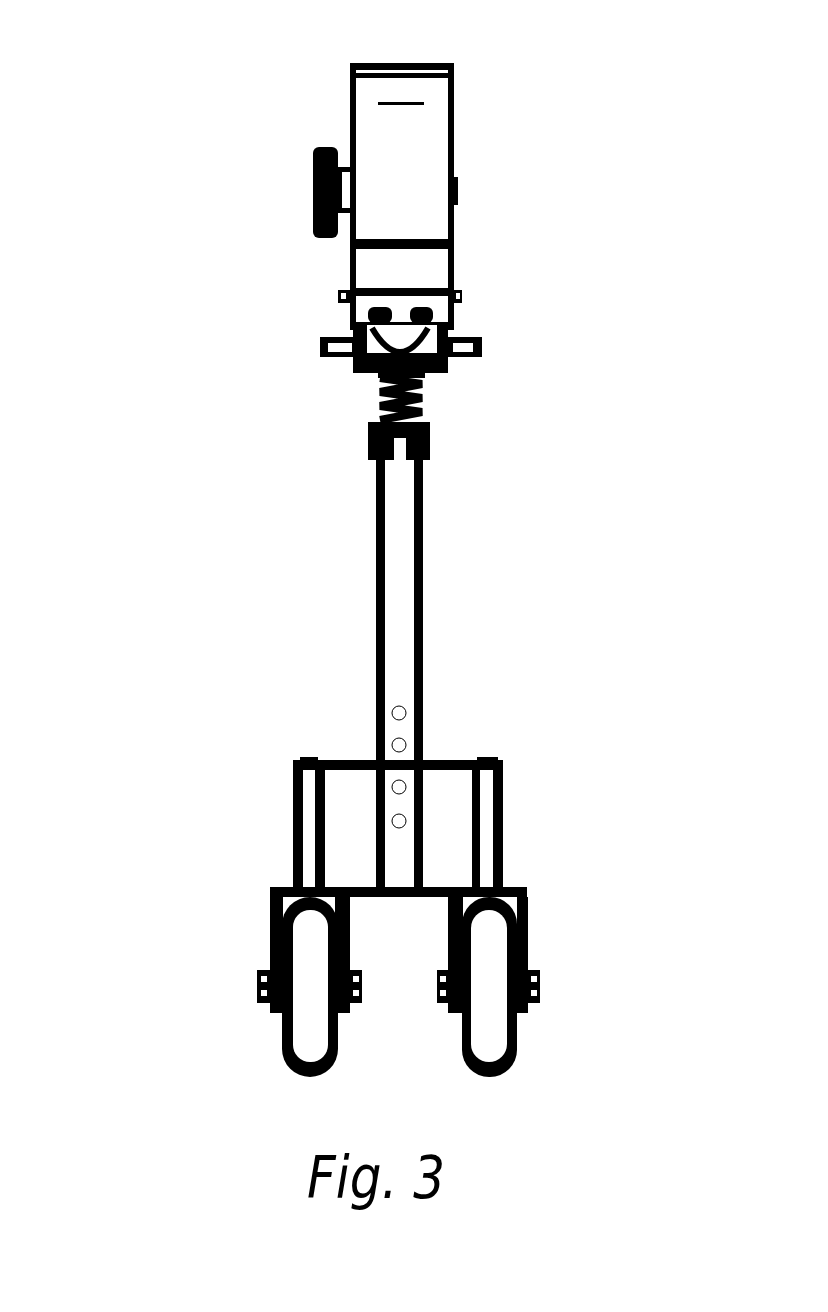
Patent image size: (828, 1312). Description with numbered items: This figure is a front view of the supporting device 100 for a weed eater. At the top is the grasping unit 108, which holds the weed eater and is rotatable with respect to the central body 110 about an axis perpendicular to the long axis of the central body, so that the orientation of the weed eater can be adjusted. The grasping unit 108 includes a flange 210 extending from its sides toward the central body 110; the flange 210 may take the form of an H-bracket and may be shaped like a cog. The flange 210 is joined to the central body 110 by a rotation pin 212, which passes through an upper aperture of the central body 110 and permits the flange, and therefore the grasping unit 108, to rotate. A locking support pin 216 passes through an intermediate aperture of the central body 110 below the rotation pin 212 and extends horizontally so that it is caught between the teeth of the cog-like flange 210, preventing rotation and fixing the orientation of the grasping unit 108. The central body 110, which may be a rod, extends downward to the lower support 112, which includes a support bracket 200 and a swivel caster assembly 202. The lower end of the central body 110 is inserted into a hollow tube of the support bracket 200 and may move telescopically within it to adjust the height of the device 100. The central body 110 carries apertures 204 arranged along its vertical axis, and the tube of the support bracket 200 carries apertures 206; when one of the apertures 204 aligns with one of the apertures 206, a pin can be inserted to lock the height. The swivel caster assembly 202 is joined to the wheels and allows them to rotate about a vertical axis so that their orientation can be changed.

The device 100 is at (156, 35).
The grasping unit 108 is at (504, 136).
The central body 110 is at (440, 567).
The lower support 112 is at (188, 805).
The support bracket 200 is at (443, 792).
The swivel caster assembly 202 is at (477, 952).
The apertures 204 is at (316, 697).
The apertures 206 is at (513, 803).
The flange 210 is at (335, 369).
The rotation pin 212 is at (485, 267).
The locking support pin 216 is at (482, 370).